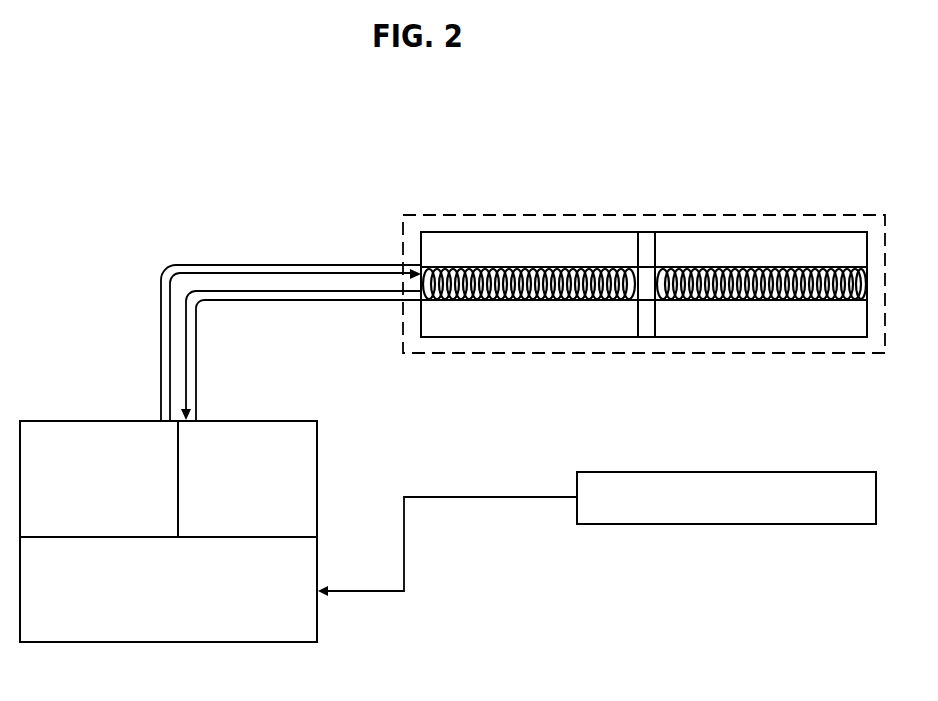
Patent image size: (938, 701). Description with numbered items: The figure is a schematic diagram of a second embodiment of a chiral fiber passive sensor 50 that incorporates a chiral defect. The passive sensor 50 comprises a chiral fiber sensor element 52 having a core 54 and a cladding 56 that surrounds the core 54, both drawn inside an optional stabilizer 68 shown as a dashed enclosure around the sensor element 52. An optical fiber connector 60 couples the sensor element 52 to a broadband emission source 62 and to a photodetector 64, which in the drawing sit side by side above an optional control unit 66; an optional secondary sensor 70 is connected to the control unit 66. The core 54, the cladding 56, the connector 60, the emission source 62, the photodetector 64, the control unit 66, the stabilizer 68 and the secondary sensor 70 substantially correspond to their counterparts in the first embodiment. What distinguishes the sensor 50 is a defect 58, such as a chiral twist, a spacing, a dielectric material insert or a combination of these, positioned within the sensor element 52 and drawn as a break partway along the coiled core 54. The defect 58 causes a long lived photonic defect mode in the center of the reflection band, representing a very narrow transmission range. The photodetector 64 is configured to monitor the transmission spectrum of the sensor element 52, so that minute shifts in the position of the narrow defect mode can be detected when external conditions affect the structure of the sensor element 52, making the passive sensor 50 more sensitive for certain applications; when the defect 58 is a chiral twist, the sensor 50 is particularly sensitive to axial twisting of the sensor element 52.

The chiral fiber passive sensor 50 is at (230, 197).
The chiral fiber sensor element 52 is at (752, 233).
The core 54 is at (540, 276).
The cladding 56 is at (447, 249).
The defect 58 is at (649, 320).
The optical fiber connector 60 is at (158, 282).
The broadband emission source 62 is at (318, 478).
The photodetector 64 is at (100, 418).
The control unit 66 is at (318, 607).
The stabilizer 68 is at (443, 353).
The secondary sensor 70 is at (726, 524).